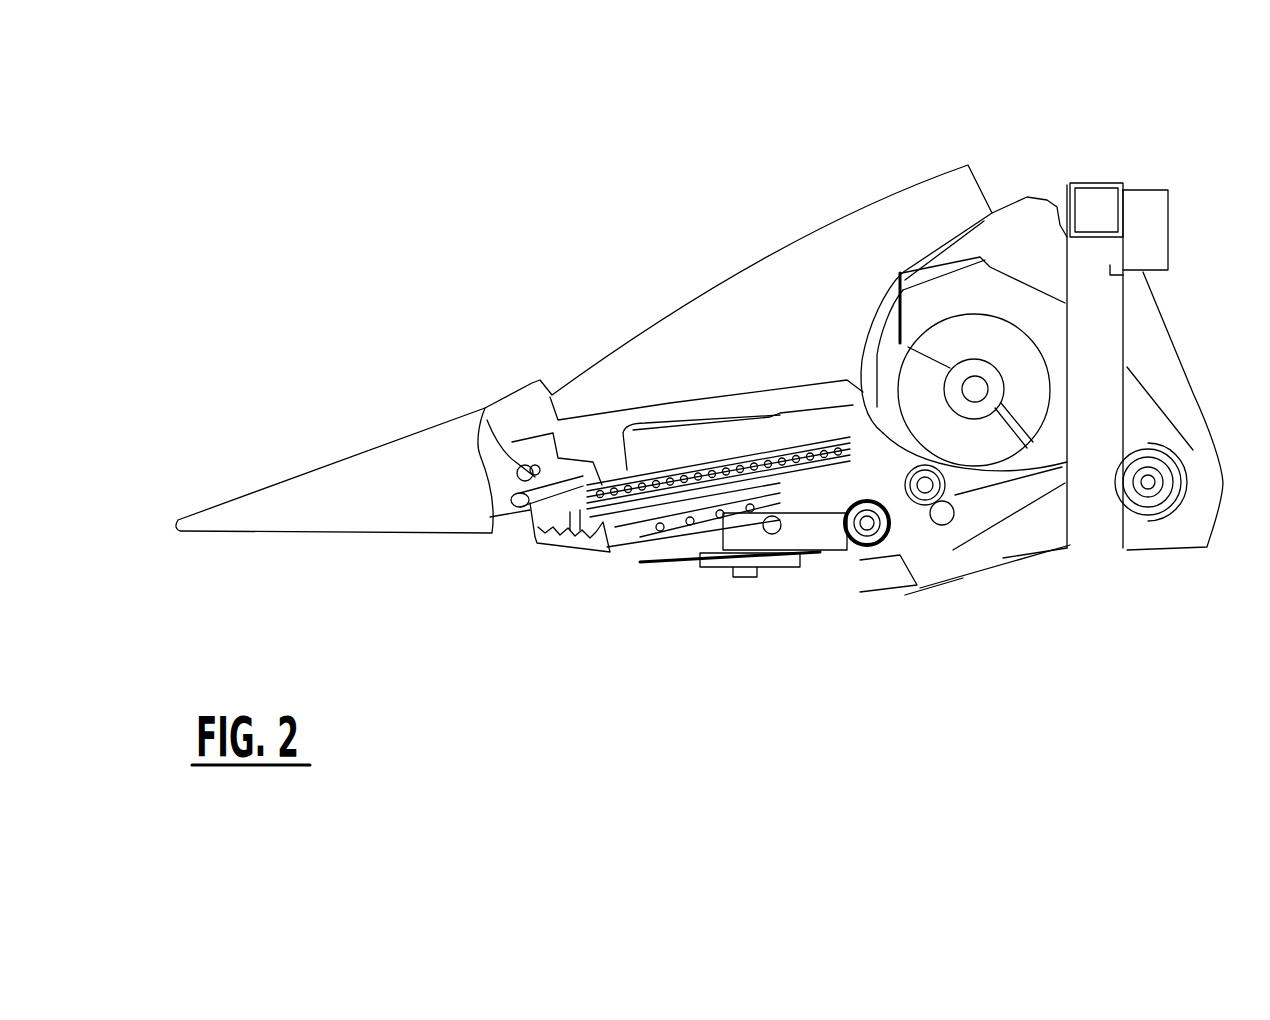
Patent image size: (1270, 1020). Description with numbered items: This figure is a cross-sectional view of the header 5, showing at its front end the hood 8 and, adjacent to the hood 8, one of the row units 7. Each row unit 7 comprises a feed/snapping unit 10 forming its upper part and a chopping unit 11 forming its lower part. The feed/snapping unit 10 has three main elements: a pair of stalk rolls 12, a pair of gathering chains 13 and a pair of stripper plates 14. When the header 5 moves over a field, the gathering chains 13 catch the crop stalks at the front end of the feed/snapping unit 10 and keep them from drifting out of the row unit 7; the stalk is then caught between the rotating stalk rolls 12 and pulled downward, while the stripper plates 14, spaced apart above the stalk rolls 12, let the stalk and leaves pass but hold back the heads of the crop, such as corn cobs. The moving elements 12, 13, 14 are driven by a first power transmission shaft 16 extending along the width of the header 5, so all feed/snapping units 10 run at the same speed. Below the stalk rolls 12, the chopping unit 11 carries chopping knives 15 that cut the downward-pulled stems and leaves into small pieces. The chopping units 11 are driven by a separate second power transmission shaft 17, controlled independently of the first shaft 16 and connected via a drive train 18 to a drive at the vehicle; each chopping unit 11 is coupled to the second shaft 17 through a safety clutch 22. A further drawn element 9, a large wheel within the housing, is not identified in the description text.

The header 5 is at (427, 205).
The row unit 7 is at (453, 590).
The hood 8 is at (345, 455).
The drive wheel 9 is at (997, 322).
The feed/snapping unit 10 is at (543, 603).
The chopping unit 11 is at (737, 638).
The pair of stalk rolls 12 is at (650, 520).
The pair of gathering chains 13 is at (705, 465).
The pair of stripper plates 14 is at (790, 460).
The chopping knives 15 is at (670, 563).
The first power transmission shaft 16 is at (920, 500).
The second power transmission shaft 17 is at (867, 537).
The drive train 18 is at (1182, 525).
The safety clutch 22 is at (870, 530).